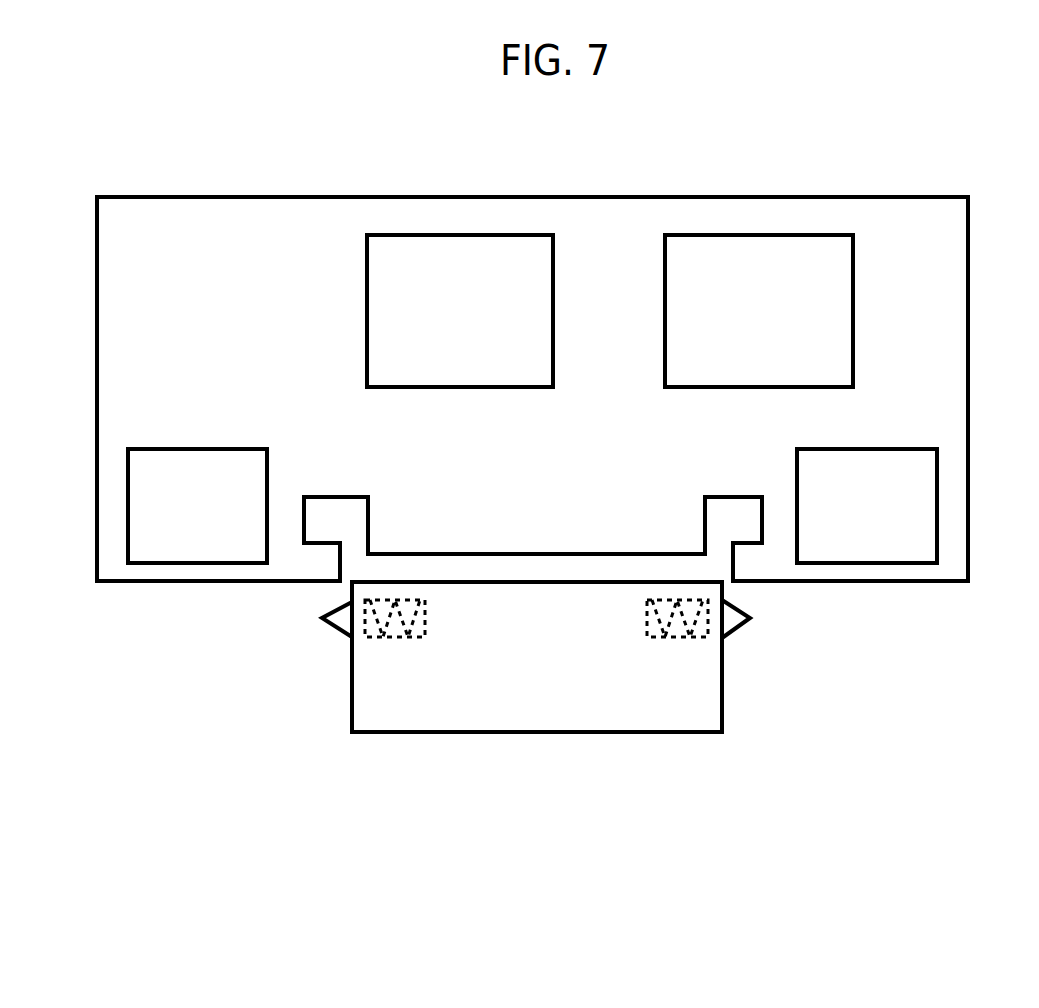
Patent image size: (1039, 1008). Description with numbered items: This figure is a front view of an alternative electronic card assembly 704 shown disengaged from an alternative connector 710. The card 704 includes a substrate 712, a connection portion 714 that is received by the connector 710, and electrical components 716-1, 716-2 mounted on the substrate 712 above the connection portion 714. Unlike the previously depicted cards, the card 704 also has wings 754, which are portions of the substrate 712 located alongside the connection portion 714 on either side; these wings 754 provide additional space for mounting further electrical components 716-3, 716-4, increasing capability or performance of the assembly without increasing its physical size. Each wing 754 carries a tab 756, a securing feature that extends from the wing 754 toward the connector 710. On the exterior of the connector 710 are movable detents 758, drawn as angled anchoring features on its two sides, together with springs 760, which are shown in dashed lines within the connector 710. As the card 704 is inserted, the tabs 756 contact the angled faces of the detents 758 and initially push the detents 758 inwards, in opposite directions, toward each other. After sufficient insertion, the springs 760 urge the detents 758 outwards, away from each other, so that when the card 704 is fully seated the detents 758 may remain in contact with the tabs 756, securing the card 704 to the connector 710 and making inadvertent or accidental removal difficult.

The alternative electronic card assembly 704 is at (668, 195).
The substrate 712 is at (807, 197).
The connection portion 714 is at (526, 527).
The electrical component 716-1 is at (759, 311).
The electrical component 716-2 is at (460, 311).
The electrical component 716-3 is at (867, 506).
The electrical component 716-4 is at (197, 506).
The wings 754 is at (142, 581).
The tabs 756 is at (322, 562).
The movable detents 758 is at (345, 625).
The springs 760 is at (425, 612).
The alternative connector 710 is at (722, 732).